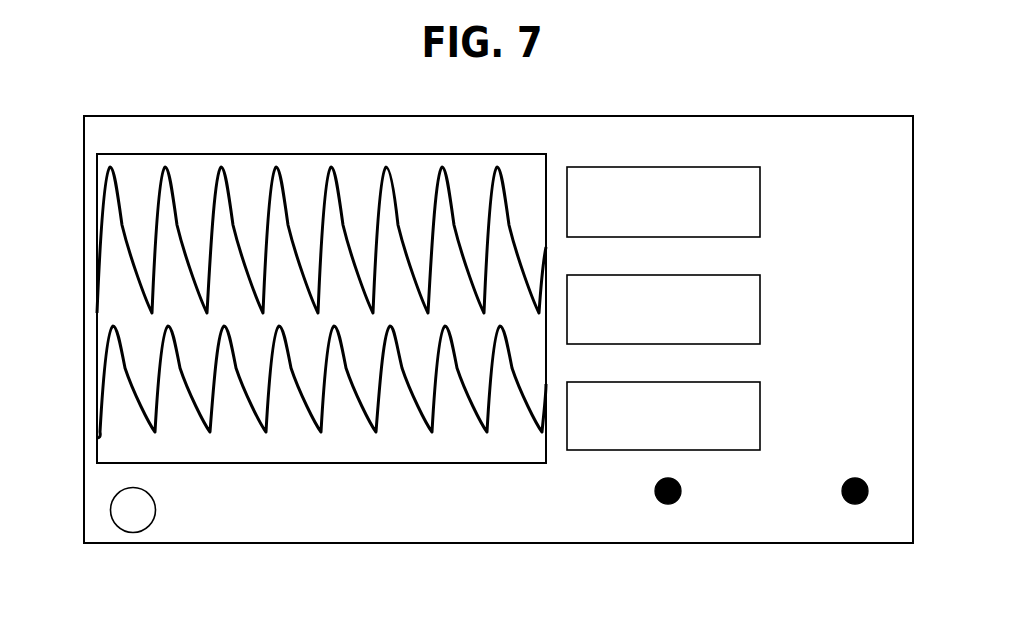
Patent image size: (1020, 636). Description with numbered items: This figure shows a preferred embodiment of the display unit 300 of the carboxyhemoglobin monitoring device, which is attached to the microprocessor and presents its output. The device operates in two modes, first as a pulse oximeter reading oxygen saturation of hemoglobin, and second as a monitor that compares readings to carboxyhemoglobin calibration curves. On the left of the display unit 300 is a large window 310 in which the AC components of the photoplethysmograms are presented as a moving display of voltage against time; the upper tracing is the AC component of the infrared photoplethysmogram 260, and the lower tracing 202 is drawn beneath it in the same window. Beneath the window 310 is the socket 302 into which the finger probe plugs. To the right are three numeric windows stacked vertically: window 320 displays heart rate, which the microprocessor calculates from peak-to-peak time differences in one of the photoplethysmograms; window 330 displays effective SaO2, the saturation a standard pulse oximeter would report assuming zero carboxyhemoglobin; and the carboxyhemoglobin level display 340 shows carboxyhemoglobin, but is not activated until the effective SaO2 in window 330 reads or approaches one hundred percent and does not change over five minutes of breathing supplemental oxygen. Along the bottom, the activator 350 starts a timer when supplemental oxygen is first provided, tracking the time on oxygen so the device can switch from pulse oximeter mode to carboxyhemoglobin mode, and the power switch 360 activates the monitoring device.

The display unit 300 is at (695, 112).
The window 310 is at (258, 158).
The AC component of the infrared photoplethysmogram 260 is at (118, 178).
The second pressure waveform 202 is at (108, 343).
The window 320 is at (752, 175).
The window 330 is at (752, 280).
The carboxyhemoglobin level display 340 is at (748, 413).
The activator 350 is at (661, 504).
The power switch 360 is at (850, 504).
The socket 302 is at (140, 504).